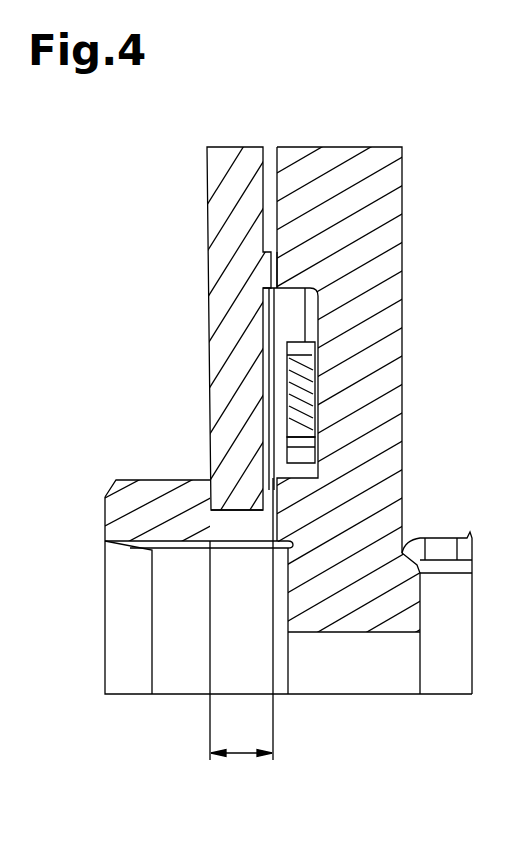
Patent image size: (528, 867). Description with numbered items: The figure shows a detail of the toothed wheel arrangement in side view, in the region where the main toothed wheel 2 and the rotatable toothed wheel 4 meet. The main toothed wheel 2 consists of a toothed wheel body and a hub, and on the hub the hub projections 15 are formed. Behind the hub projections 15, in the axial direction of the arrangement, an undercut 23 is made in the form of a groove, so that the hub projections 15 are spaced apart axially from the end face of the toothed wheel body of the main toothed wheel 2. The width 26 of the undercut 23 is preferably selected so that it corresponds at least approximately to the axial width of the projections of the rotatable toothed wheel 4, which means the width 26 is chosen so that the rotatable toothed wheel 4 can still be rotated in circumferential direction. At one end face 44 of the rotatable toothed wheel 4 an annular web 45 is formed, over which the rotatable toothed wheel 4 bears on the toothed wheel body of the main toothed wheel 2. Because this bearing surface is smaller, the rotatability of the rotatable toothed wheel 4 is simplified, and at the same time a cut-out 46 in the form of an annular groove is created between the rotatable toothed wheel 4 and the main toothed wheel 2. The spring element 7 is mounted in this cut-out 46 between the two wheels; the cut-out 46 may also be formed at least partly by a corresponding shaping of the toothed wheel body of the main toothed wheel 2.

The main toothed wheel 2 is at (386, 132).
The rotatable toothed wheel 4 is at (187, 176).
The spring element 7 is at (321, 385).
The hub projections 15 is at (142, 465).
The undercut 23 is at (216, 522).
The width 26 is at (248, 764).
The end face 44 is at (273, 317).
The annular web 45 is at (280, 267).
The cut-out 46 is at (321, 437).